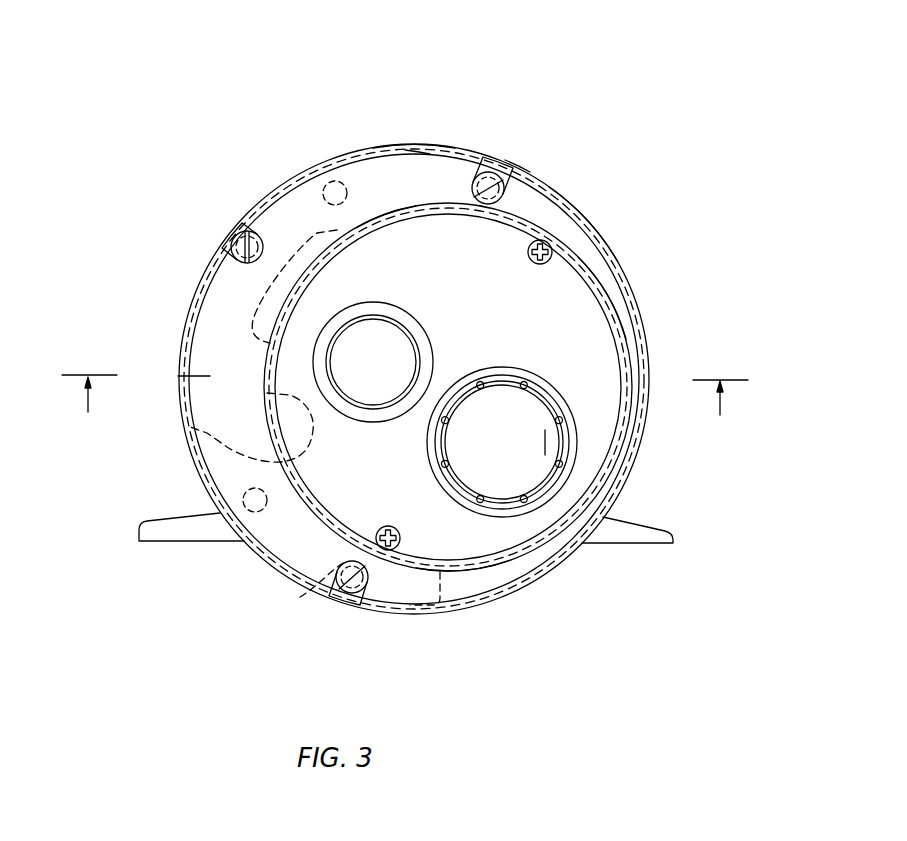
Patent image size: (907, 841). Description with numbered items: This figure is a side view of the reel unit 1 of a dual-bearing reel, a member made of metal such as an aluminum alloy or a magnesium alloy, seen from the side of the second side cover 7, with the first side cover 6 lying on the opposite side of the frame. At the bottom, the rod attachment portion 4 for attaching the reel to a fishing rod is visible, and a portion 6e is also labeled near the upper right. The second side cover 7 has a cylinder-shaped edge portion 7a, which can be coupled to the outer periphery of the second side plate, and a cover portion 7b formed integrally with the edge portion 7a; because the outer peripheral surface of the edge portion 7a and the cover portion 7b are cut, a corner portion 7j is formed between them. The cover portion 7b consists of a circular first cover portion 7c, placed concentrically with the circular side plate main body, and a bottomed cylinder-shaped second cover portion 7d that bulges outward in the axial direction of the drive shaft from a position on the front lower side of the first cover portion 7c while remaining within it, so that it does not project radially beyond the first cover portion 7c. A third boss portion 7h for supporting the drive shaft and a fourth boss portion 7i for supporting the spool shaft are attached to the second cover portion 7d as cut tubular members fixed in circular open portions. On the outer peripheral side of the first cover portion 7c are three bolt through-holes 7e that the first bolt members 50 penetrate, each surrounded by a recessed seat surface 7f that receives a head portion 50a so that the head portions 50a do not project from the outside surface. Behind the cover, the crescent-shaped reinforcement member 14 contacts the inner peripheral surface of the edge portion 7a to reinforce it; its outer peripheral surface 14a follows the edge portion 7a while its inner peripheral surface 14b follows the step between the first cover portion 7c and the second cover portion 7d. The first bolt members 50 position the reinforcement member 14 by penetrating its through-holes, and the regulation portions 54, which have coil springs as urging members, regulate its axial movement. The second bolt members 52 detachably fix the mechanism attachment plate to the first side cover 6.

The reel unit 1 is at (700, 348).
The rod attachment portion 4 is at (630, 516).
The first side cover 6 is at (590, 180).
The engaging portion of housing 6e is at (517, 167).
The second side cover 7 is at (613, 103).
The edge portion 7a is at (597, 229).
The cover portion 7b is at (393, 146).
The first cover portion 7c is at (373, 172).
The second cover portion 7d is at (499, 585).
The bolt through-hole 7e is at (235, 262).
The seat surface 7f is at (481, 160).
The third boss portion 7h is at (541, 500).
The fourth boss portion 7i is at (327, 363).
The corner portion 7j is at (617, 272).
The reinforcement member 14 is at (419, 140).
The outer peripheral surface 14a is at (195, 303).
The inner peripheral surface 14b is at (190, 427).
The first bolt member 50 is at (515, 166).
The head portion 50a is at (492, 180).
The second bolt member 52 is at (557, 257).
The regulation portion 54 is at (326, 180).